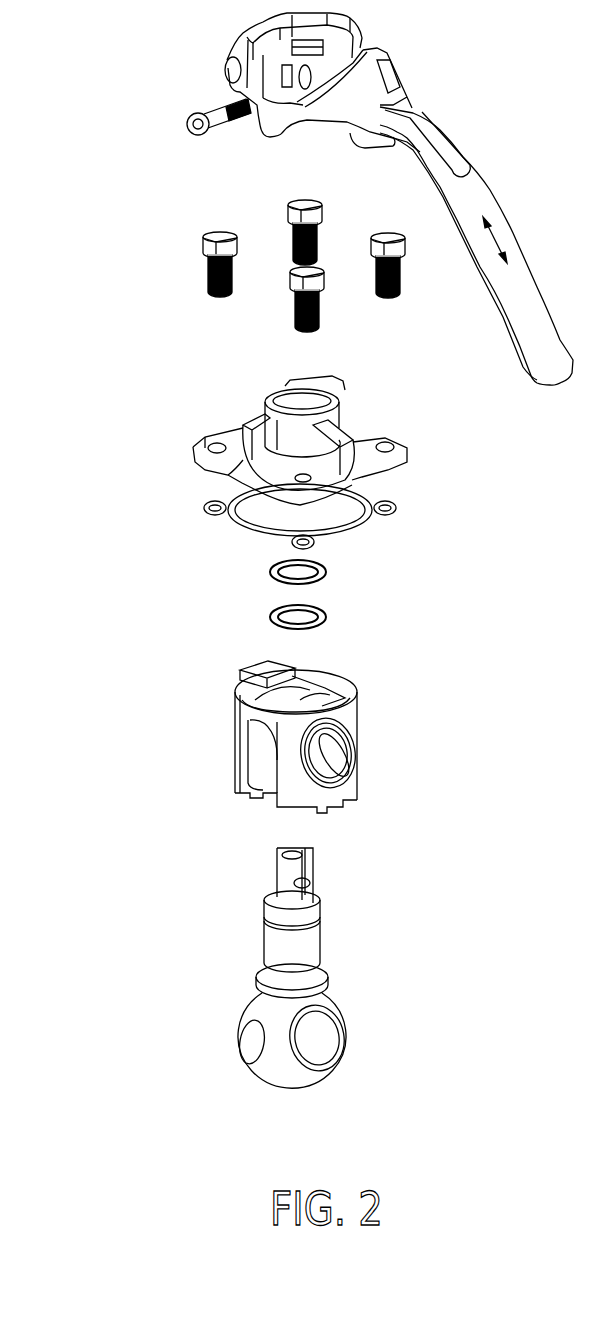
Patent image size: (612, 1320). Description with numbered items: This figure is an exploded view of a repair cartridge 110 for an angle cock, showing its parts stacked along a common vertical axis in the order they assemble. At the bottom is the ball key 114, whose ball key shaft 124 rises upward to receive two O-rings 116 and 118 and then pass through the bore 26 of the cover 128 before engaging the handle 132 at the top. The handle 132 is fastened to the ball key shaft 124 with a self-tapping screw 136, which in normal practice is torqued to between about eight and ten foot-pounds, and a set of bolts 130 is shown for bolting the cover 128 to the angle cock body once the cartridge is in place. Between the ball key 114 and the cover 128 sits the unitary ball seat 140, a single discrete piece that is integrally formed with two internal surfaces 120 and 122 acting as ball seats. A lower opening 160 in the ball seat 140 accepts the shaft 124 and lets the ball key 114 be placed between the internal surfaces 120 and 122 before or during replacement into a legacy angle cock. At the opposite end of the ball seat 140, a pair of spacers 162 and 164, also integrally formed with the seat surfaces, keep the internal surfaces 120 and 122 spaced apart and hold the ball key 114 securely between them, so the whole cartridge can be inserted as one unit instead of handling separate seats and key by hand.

The valve assembly 110 is at (113, 641).
The ball key 114 is at (258, 985).
The O-ring 116 is at (272, 618).
The O-ring 118 is at (272, 573).
The internal surface 120 is at (295, 727).
The internal surface 122 is at (355, 747).
The ball key shaft 124 is at (320, 937).
The cover 128 is at (200, 443).
The bolts 130 is at (208, 275).
The handle 132 is at (490, 188).
The self-tapping screw 136 is at (185, 117).
The unitary ball seat 140 is at (237, 692).
The lower opening 160 is at (257, 815).
The spacer 162 is at (235, 712).
The spacer 164 is at (323, 672).
The bore 26 is at (332, 376).